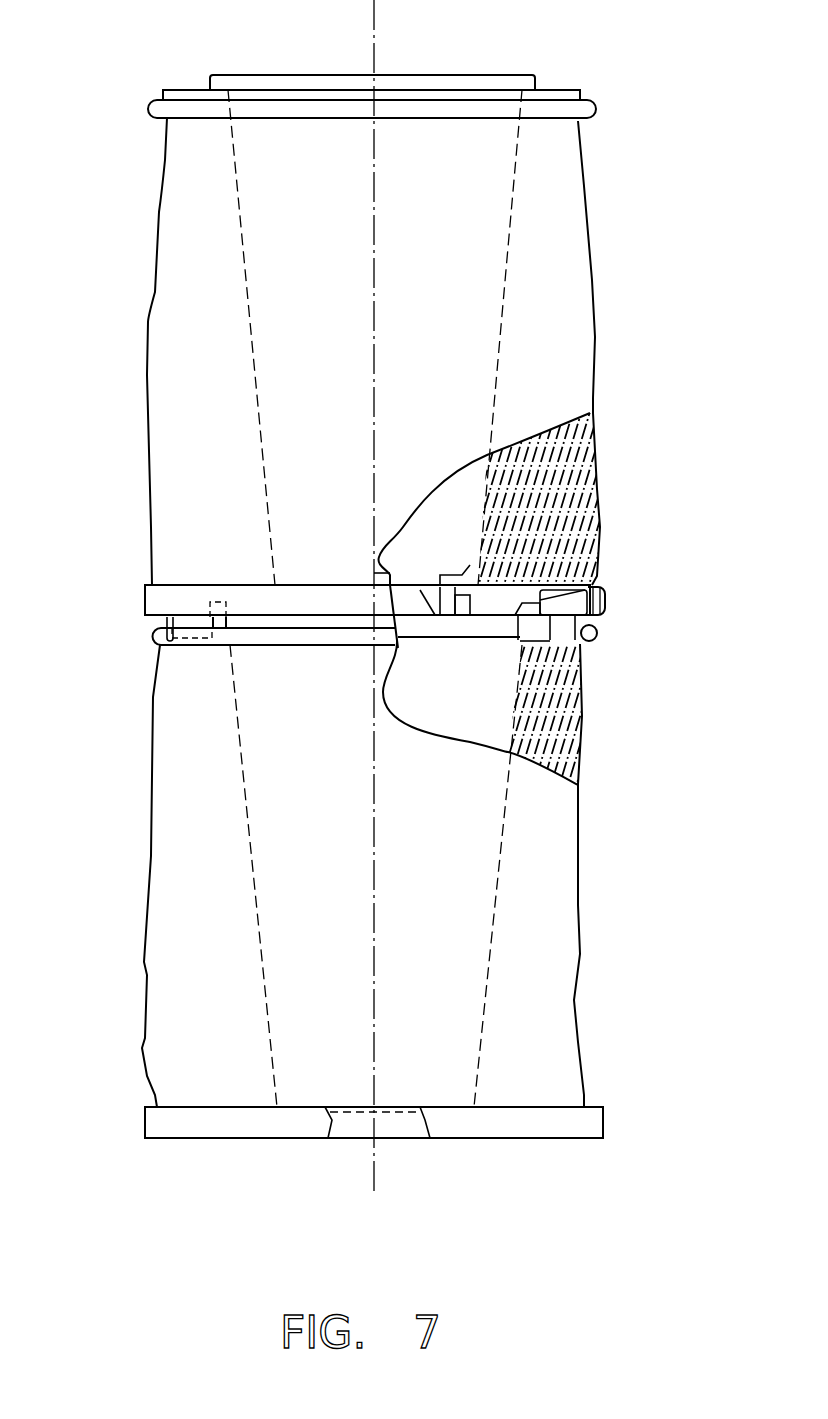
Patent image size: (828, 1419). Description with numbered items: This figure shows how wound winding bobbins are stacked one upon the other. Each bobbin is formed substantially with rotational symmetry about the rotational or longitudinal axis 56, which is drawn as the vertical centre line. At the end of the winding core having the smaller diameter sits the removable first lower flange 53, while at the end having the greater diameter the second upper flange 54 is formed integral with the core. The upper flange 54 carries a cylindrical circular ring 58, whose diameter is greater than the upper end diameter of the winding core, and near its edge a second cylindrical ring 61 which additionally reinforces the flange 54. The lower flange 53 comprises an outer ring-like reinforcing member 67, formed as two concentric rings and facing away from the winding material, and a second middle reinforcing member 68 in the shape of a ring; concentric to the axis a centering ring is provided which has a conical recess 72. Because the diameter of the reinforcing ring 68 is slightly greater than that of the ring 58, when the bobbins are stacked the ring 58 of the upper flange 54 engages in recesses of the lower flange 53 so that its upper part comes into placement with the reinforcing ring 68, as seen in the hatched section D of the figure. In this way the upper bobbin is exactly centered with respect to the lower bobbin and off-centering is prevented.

The first lower flange 53 is at (150, 600).
The second upper flange 54 is at (602, 112).
The longitudinal axis 56 is at (376, 232).
The cylindrical circular ring 58 is at (218, 84).
The second cylindrical ring 61 is at (162, 94).
The outer ring-like reinforcing member 67 is at (606, 603).
The middle reinforcing member 68 is at (592, 585).
The conical recess 72 is at (338, 1140).
The wall section D is at (565, 472).